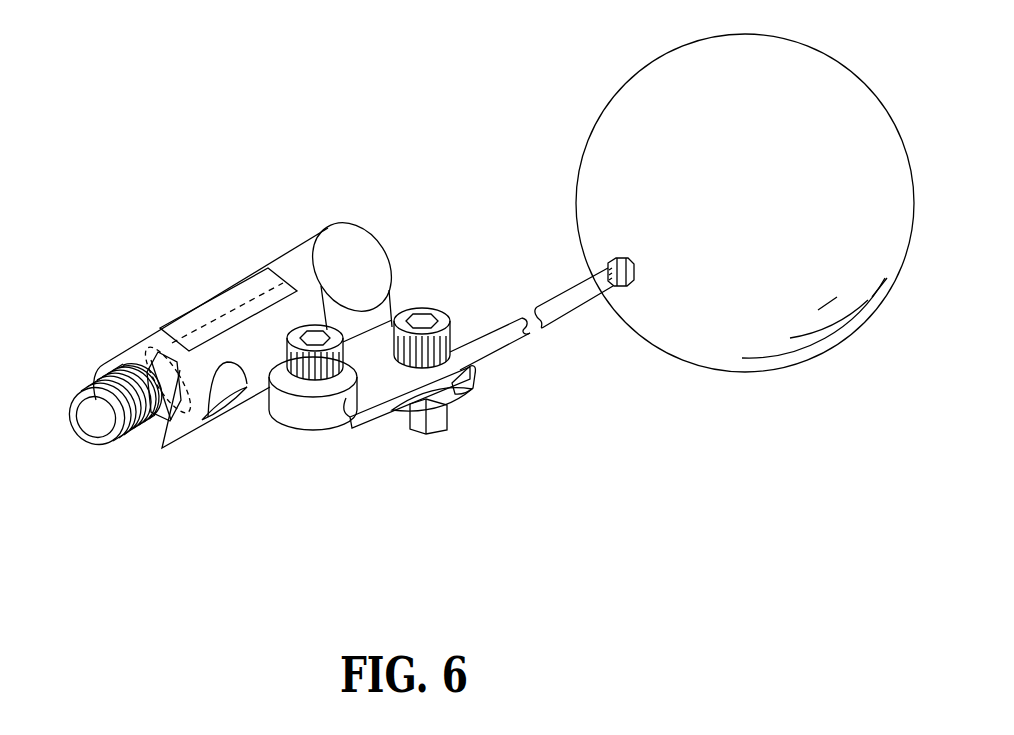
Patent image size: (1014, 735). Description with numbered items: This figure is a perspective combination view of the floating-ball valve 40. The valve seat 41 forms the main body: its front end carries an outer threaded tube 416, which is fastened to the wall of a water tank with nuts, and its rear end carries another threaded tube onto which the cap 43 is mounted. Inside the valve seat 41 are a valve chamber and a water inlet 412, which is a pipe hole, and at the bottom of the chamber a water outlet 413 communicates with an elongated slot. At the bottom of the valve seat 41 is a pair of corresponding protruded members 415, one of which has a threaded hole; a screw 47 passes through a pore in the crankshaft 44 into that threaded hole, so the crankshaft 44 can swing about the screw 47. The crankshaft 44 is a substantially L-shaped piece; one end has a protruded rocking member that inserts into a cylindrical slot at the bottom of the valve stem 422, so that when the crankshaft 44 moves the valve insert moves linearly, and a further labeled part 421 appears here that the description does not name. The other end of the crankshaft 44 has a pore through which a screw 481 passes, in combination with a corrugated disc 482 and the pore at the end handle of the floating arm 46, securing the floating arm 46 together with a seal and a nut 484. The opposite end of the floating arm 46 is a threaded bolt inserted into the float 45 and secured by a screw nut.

The floating-ball valve 40 is at (270, 146).
The valve seat 41 is at (184, 318).
The water inlet 412 is at (100, 441).
The water outlet 413 is at (223, 408).
The protruded member 415 is at (321, 419).
The outer threaded tube 416 is at (108, 374).
The flange 421 is at (156, 347).
The valve stem 422 is at (241, 300).
The cap 43 is at (328, 247).
The crankshaft 44 is at (367, 397).
The float 45 is at (704, 353).
The floating arm 46 is at (552, 308).
The screw 47 is at (328, 328).
The screw 481 is at (421, 318).
The corrugated disc 482 is at (464, 378).
The nut 484 is at (433, 417).